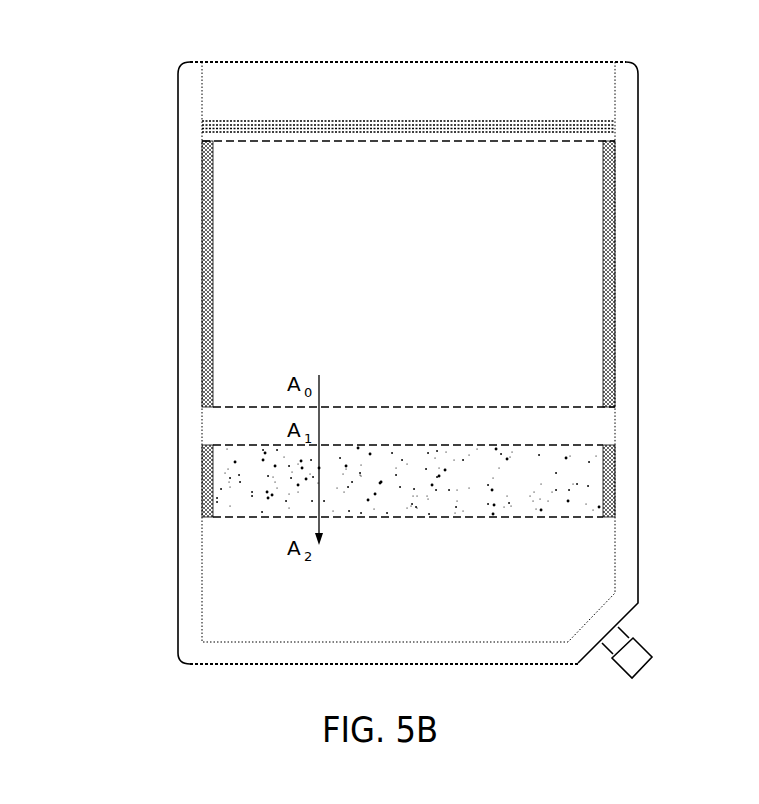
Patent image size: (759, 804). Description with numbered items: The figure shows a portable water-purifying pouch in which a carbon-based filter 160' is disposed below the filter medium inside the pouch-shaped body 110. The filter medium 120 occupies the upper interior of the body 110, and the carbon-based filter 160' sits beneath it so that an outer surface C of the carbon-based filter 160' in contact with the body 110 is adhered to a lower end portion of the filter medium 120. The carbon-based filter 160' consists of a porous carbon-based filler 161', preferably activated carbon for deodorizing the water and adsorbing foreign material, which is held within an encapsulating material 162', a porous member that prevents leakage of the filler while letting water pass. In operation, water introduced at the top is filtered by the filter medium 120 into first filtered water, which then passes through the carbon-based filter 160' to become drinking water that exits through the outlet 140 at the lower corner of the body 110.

The pouch-shaped body 110 is at (640, 158).
The filter medium 120 is at (608, 270).
The carbon-based filter 160' is at (321, 507).
The carbon-based filler 161' is at (355, 479).
The encapsulating material 162' is at (355, 543).
The outer surface of the carbon-based filter C is at (604, 482).
The outlet 140 is at (645, 657).